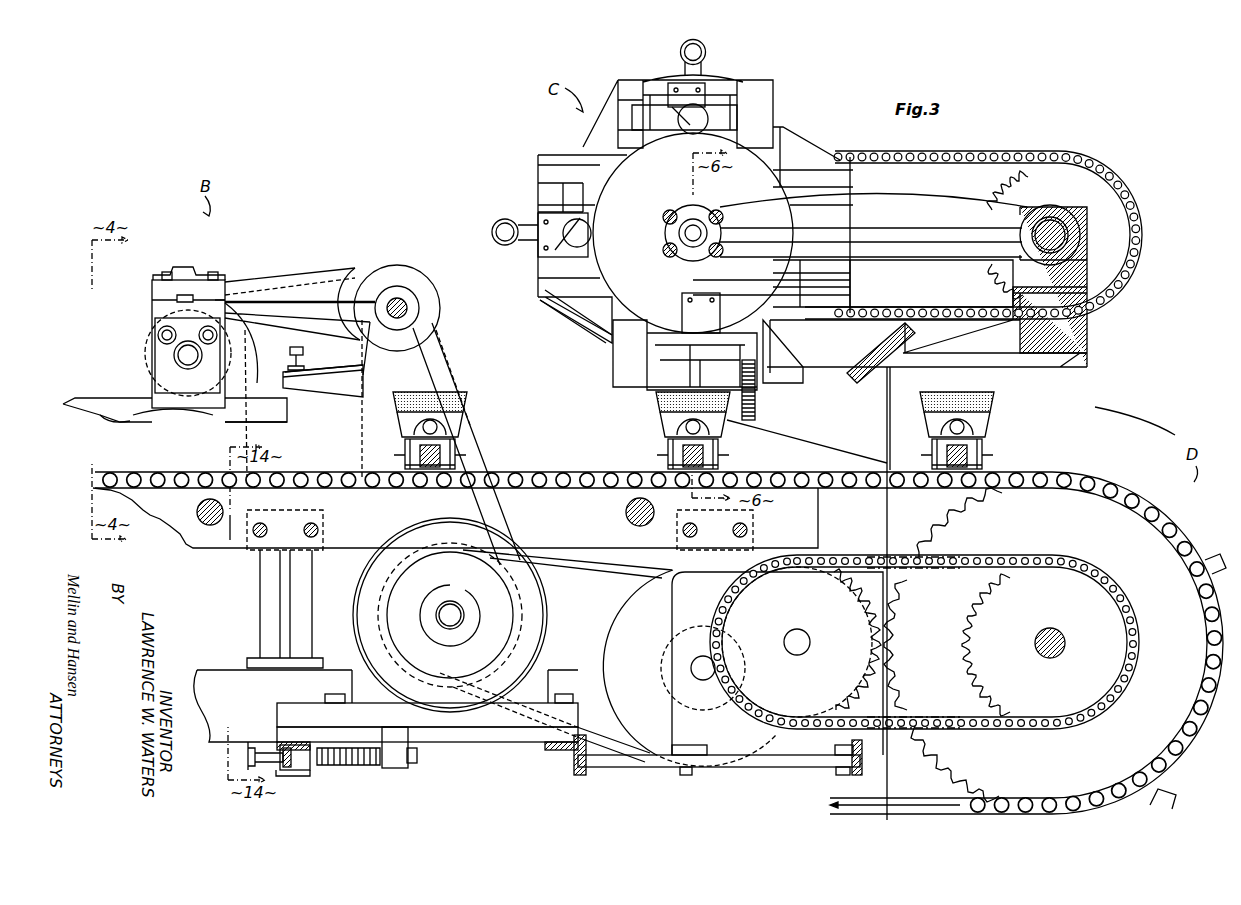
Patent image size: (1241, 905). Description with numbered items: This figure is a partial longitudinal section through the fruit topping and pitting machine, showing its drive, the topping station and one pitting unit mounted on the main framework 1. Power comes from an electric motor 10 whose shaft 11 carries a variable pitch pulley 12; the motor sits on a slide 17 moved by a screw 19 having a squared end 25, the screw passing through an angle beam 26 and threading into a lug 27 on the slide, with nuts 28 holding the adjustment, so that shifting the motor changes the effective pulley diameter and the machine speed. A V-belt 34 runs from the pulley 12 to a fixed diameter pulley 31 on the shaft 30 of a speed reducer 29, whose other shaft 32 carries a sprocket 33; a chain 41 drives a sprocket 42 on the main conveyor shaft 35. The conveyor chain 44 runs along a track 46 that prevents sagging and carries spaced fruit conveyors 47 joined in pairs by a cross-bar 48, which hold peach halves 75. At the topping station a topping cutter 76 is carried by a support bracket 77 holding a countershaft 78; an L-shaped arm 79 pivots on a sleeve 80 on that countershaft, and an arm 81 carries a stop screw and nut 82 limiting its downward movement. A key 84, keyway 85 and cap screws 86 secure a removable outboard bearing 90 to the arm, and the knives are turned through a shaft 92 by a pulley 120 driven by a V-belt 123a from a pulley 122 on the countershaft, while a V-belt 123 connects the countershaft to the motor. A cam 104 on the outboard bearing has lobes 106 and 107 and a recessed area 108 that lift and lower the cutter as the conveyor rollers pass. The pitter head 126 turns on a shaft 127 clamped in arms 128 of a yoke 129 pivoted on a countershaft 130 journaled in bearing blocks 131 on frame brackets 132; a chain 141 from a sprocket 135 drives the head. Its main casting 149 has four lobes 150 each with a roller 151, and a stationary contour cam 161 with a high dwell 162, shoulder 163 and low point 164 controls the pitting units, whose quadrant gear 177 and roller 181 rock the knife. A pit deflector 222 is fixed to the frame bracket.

The main framework 1 is at (573, 772).
The electric motor 10 is at (360, 599).
The motor shaft 11 is at (451, 602).
The variable pitch pulley 12 is at (540, 643).
The motor slide 17 is at (450, 724).
The adjusting screw 19 is at (335, 765).
The squared end 25 is at (252, 750).
The angle beam 26 is at (282, 777).
The lug 27 is at (396, 768).
The nuts 28 is at (274, 744).
The speed reducer 29 is at (672, 606).
The speed reducer input shaft 30 is at (706, 673).
The fixed diameter pulley 31 is at (616, 619).
The speed reducer output shaft 32 is at (792, 650).
The sprocket 33 is at (817, 598).
The V-belt 34 is at (570, 568).
The main conveyor shaft 35 is at (1058, 638).
The chain 41 is at (982, 562).
The sprocket 42 is at (960, 613).
The conveyor chain 44 is at (575, 472).
The track or guide 46 is at (232, 545).
The fruit conveyor 47 is at (474, 418).
The cross-bar 48 is at (158, 444).
The peach halves 75 is at (476, 382).
The topping cutter 76 is at (246, 260).
The topping cutter support bracket 77 is at (440, 362).
The countershaft 78 is at (418, 298).
The L-shaped arm 79 is at (290, 278).
The sleeve 80 is at (406, 294).
The arm 81 is at (335, 388).
The adjustable stop screw and nut 82 is at (288, 352).
The key 84 is at (221, 282).
The keyway 85 is at (176, 298).
The cap screws 86 is at (172, 272).
The removable outboard bearing 90 is at (155, 318).
The shaft 92 is at (188, 362).
The cam 104 is at (84, 396).
The first cam lobe 106 is at (110, 422).
The second cam lobe 107 is at (279, 420).
The recessed area 108 is at (214, 418).
The pulley 120 is at (140, 362).
The pulley 122 is at (395, 268).
The V-belt 123 is at (460, 380).
The V-belt 123a is at (357, 276).
The pitter head 126 is at (778, 74).
The pitter head shaft 127 is at (690, 237).
The yoke arms 128 is at (909, 200).
The yoke 129 is at (964, 196).
The countershaft 130 is at (1050, 219).
The bearing blocks 131 is at (1084, 262).
The frame brackets 132 is at (1088, 362).
The sprocket 135 is at (1083, 183).
The chain 141 is at (1000, 152).
The main casting 149 is at (738, 76).
The lobes 150 is at (638, 80).
The roller 151 is at (704, 42).
The stationary contour cam 161 is at (604, 190).
The rise or high dwell 162 is at (610, 346).
The shoulder 163 is at (682, 300).
The low point 164 is at (760, 292).
The quadrant gear 177 is at (755, 408).
The roller 181 is at (693, 127).
The pit deflector 222 is at (861, 364).